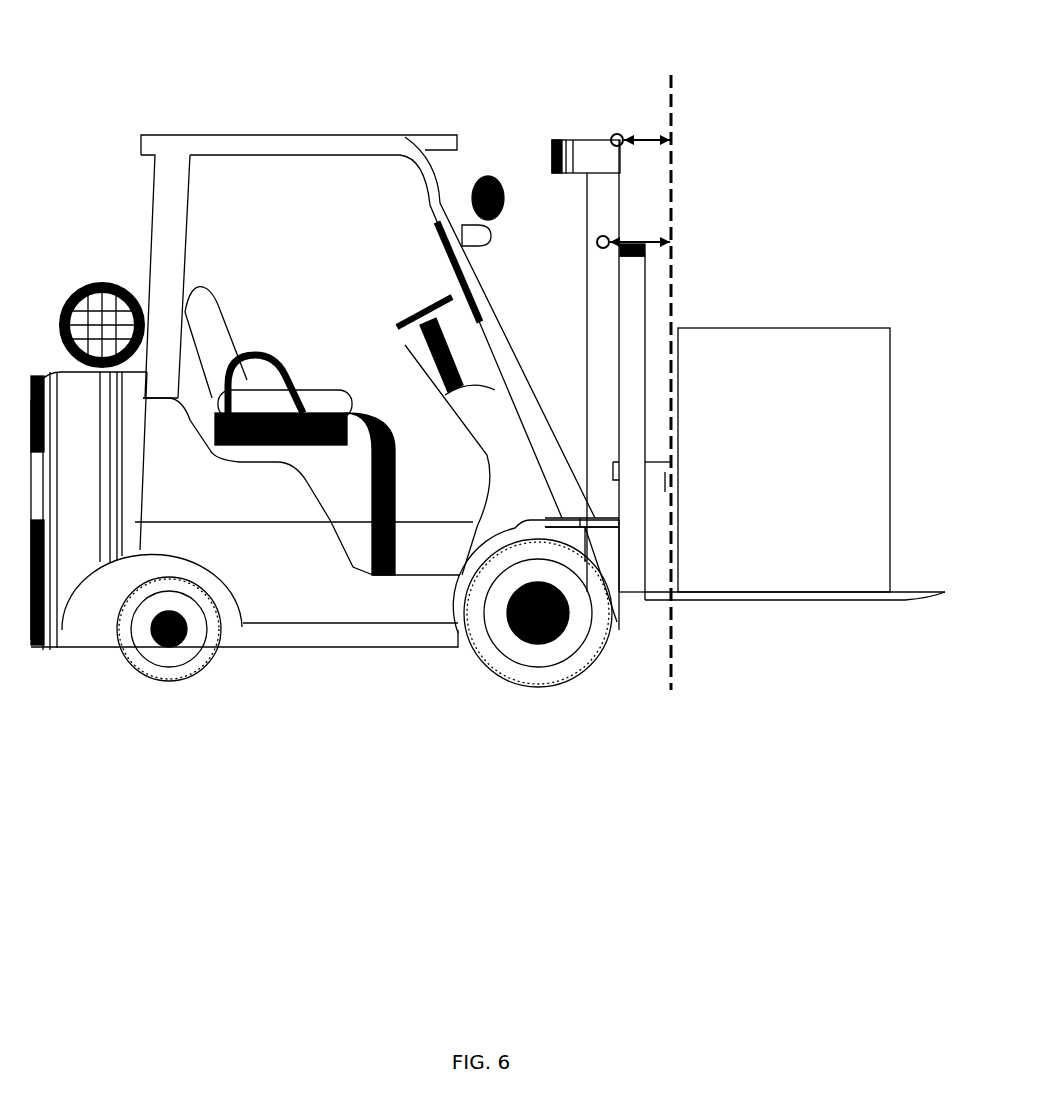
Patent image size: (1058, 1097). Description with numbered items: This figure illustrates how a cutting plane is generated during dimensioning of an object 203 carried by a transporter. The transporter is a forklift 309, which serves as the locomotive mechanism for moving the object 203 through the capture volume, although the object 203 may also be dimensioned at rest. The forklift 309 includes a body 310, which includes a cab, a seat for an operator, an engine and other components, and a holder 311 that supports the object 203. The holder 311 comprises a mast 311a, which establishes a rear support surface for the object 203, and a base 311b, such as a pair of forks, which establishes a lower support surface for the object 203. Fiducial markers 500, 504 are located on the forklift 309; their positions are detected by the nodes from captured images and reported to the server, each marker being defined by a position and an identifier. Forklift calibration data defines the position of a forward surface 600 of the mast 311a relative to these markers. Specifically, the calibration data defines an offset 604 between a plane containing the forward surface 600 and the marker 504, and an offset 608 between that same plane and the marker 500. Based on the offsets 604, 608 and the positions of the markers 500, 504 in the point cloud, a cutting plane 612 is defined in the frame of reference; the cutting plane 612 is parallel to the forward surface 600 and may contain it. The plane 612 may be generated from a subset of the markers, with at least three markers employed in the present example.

The object 203 is at (784, 460).
The forklift 309 is at (178, 128).
The body 310 is at (352, 617).
The holder 311 is at (553, 133).
The mast 311a is at (607, 323).
The base 311b is at (790, 598).
The fiducial marker 500 is at (598, 245).
The fiducial marker 504 is at (615, 134).
The forward surface 600 is at (669, 483).
The offset 604 is at (647, 138).
The offset 608 is at (660, 242).
The cutting plane 612 is at (673, 398).